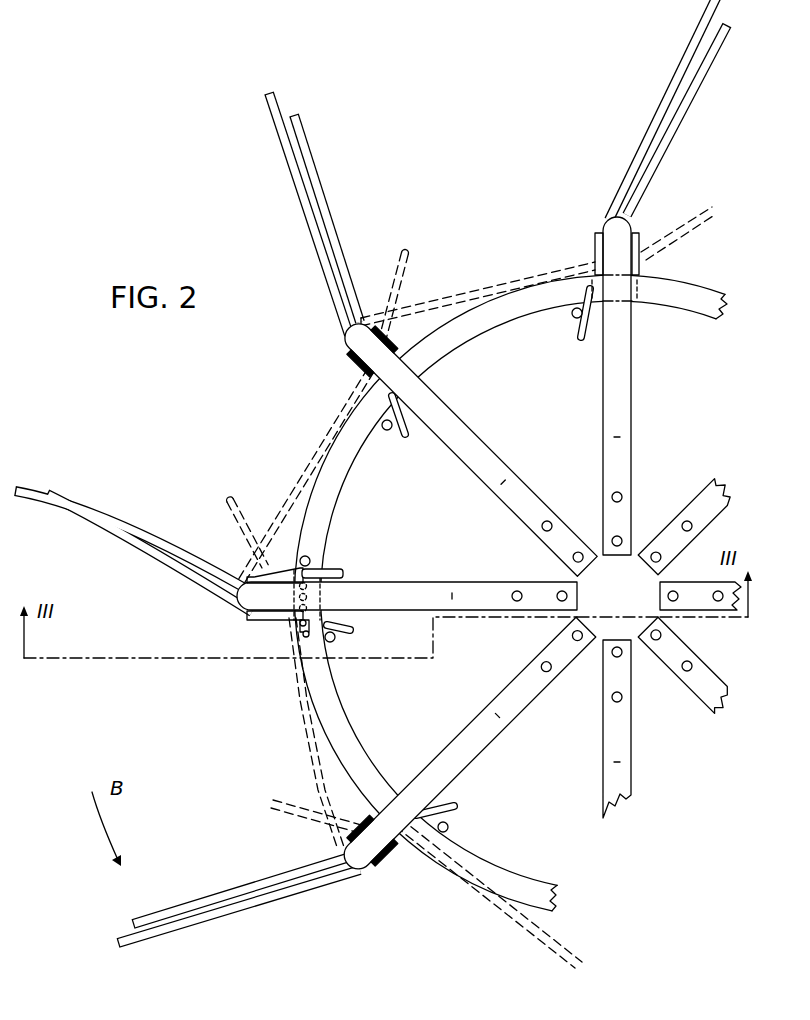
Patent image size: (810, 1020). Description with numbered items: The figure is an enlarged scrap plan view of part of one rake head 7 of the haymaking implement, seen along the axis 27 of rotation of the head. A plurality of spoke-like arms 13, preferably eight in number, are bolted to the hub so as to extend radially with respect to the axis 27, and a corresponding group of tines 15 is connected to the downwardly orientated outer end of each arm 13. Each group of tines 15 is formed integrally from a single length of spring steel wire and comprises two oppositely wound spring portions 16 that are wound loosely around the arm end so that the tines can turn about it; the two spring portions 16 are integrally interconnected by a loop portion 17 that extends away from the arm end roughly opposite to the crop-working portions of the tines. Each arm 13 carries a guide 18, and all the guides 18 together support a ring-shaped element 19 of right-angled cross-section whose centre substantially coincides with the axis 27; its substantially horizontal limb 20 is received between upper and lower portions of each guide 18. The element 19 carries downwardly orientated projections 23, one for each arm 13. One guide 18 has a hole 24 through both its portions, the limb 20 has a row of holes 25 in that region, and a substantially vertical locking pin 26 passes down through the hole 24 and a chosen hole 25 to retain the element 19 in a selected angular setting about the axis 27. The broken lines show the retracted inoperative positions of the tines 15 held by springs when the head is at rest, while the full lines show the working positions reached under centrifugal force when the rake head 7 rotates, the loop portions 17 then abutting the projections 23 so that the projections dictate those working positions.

The rake head 7 is at (604, 206).
The spoke-like arm 13 is at (497, 586).
The group of tines 15 is at (292, 181).
The spring portion 16 is at (247, 616).
The loop portion 17 is at (582, 340).
The guide 18 is at (641, 263).
The ring-shaped element 19 is at (529, 873).
The substantially horizontal limb 20 is at (562, 900).
The downwardly orientated projection 23 is at (572, 316).
The hole 24 is at (311, 560).
The holes 25 is at (303, 628).
The locking pin 26 is at (345, 574).
The axis 27 is at (626, 601).